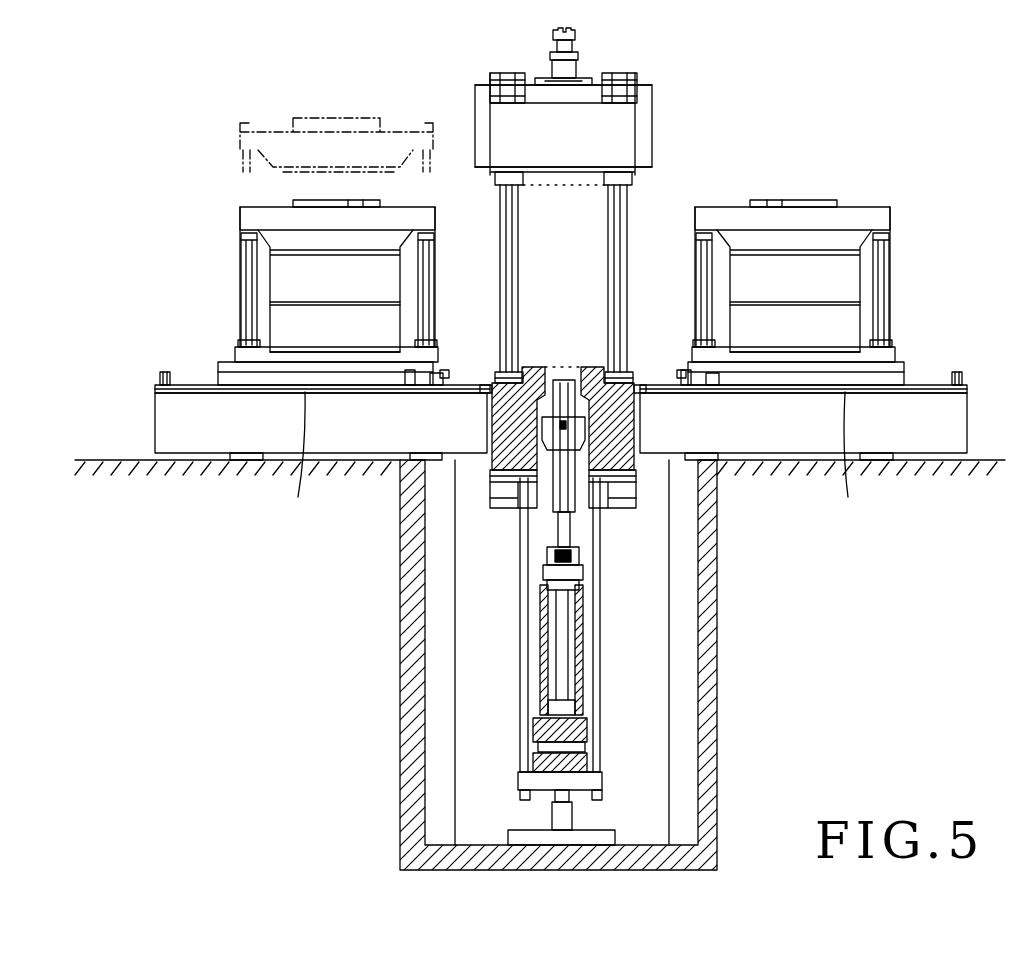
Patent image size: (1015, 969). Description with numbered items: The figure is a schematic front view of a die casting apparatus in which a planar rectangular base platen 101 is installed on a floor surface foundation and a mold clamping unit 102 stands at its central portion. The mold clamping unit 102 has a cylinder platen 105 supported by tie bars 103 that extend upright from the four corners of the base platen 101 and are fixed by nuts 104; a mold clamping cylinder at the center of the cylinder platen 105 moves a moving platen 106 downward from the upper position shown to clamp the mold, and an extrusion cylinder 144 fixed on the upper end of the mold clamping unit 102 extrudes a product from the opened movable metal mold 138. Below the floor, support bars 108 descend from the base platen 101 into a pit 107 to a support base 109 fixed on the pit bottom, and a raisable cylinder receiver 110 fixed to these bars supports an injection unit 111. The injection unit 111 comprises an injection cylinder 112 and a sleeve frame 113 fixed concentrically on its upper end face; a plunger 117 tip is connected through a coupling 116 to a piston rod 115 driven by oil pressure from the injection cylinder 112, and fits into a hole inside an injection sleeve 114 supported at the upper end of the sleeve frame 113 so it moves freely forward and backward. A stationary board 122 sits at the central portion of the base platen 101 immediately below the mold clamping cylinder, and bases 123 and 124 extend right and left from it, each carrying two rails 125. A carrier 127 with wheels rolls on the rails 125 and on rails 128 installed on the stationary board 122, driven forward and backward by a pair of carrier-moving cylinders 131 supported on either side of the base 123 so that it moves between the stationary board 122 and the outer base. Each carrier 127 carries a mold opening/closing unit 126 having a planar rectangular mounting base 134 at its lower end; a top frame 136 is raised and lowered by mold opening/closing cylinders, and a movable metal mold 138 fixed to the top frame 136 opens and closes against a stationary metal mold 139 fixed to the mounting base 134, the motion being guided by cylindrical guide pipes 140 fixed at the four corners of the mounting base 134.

The base platen 101 is at (490, 380).
The mold clamping unit 102 is at (677, 88).
The tie bars 103 is at (628, 205).
The nuts 104 is at (620, 73).
The cylinder platen 105 is at (652, 127).
The moving platen 106 is at (550, 190).
The pit 107 is at (706, 660).
The support bars 108 is at (520, 642).
The support base 109 is at (605, 830).
The cylinder receiver 110 is at (600, 778).
The injection unit 111 is at (617, 559).
The injection cylinder 112 is at (583, 668).
The sleeve frame 113 is at (552, 495).
The injection sleeve 114 is at (580, 378).
The piston rod 115 is at (568, 592).
The coupling 116 is at (548, 556).
The plunger 117 is at (566, 425).
The stationary board 122 is at (577, 354).
The base 123 is at (936, 450).
The base 124 is at (157, 432).
The rails 125 is at (965, 392).
The mold opening/closing unit 126 is at (236, 228).
The carrier 127 is at (902, 370).
The rails 128 is at (627, 392).
The carrier-moving cylinders 131 is at (572, 462).
The mounting base 134 is at (868, 345).
The top frame 136 is at (273, 140).
The movable metal mold 138 is at (862, 265).
The stationary metal mold 139 is at (862, 325).
The guide pipes 140 is at (890, 268).
The extrusion cylinder 144 is at (578, 58).